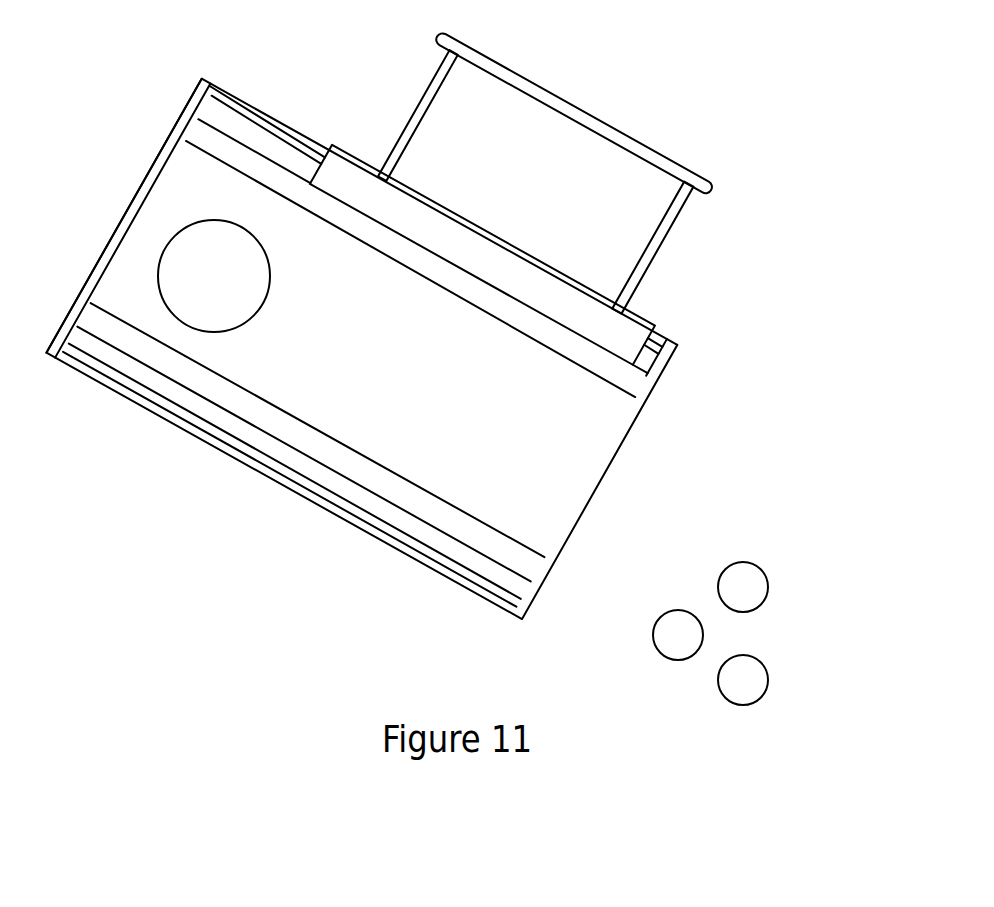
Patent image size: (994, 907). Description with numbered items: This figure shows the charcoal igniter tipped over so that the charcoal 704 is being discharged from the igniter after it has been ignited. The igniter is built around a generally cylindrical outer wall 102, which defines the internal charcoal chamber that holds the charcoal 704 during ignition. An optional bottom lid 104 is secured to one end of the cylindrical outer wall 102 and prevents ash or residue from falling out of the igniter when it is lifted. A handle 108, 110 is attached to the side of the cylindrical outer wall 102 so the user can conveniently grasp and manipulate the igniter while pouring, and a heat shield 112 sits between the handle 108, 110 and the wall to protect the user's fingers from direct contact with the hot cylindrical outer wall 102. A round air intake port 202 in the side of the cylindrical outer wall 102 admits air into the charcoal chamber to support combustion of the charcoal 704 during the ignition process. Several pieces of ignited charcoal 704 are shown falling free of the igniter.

The cylindrical outer wall 102 is at (230, 450).
The bottom lid 104 is at (122, 218).
The handle 108 is at (540, 91).
The handle 110 is at (424, 105).
The heat shield 112 is at (429, 217).
The air intake port 202 is at (255, 272).
The charcoal 704 is at (692, 638).